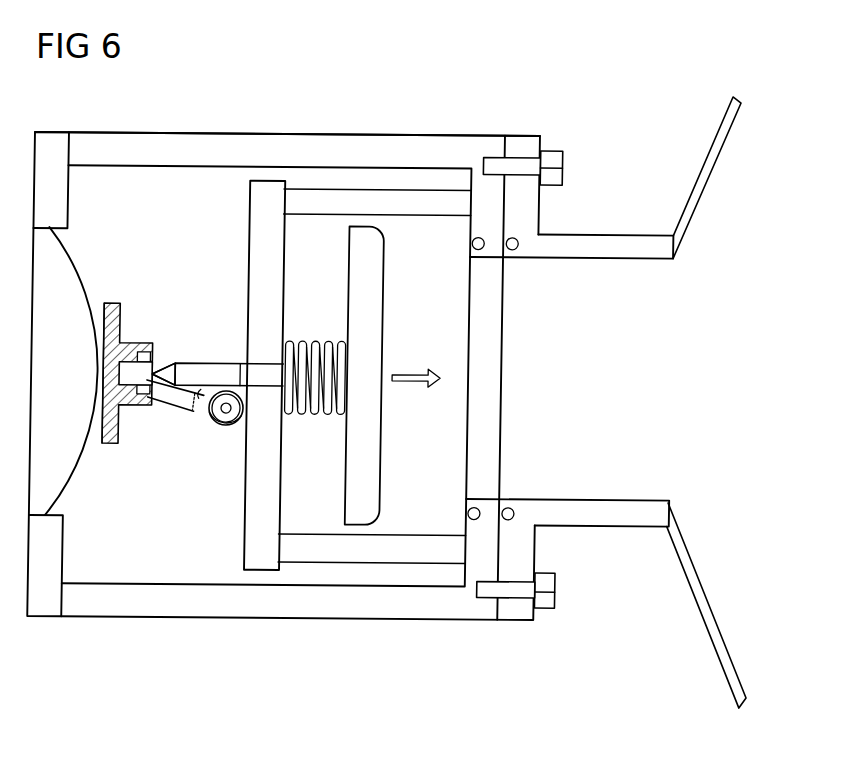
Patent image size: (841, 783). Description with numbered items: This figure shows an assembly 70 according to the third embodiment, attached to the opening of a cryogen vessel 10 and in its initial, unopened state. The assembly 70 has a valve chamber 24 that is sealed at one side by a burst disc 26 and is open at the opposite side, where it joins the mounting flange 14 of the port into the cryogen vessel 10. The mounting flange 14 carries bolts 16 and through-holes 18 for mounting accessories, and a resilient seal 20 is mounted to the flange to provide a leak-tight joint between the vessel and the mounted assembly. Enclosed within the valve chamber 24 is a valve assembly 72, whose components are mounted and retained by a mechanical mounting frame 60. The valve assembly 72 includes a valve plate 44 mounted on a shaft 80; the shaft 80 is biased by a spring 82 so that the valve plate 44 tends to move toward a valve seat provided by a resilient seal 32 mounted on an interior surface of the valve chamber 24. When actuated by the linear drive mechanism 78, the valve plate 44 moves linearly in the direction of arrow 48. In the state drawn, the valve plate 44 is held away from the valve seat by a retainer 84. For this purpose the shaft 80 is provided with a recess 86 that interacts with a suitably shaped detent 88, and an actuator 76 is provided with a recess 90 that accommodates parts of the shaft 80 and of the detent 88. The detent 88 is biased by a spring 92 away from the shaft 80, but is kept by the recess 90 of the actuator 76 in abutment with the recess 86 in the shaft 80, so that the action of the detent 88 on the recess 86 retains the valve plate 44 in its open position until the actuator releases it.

The cryogen vessel 10 is at (698, 191).
The mounting flange 14 is at (621, 515).
The bolts 16 is at (564, 174).
The through-holes 18 is at (524, 170).
The resilient seal 20 is at (517, 504).
The valve chamber 24 is at (291, 130).
The burst disc 26 is at (80, 307).
The resilient seal 32 is at (480, 504).
The valve plate 44 is at (379, 260).
The arrow 48 is at (419, 371).
The mechanical mounting frame 60 is at (252, 238).
The assembly 70 is at (241, 631).
The valve assembly 72 is at (168, 472).
The actuator 76 is at (110, 302).
The linear drive mechanism 78 is at (244, 352).
The shaft 80 is at (221, 365).
The spring 82 is at (315, 340).
The retainer 84 is at (128, 324).
The recess 86 is at (162, 362).
The detent 88 is at (182, 396).
The recess 90 is at (150, 342).
The spring 92 is at (237, 429).